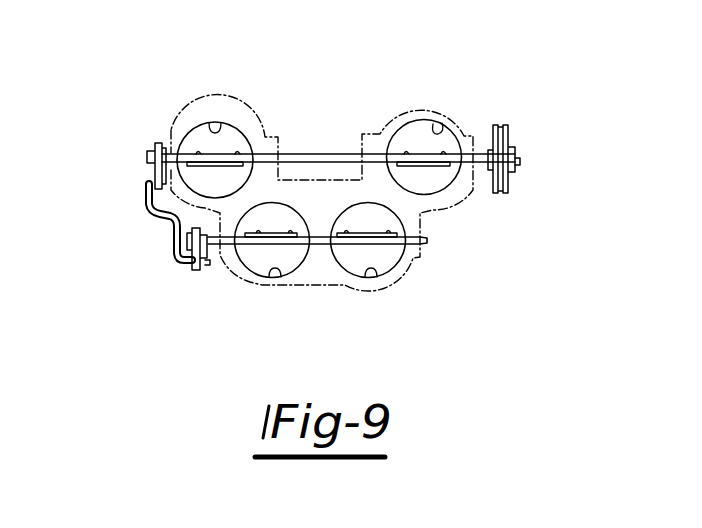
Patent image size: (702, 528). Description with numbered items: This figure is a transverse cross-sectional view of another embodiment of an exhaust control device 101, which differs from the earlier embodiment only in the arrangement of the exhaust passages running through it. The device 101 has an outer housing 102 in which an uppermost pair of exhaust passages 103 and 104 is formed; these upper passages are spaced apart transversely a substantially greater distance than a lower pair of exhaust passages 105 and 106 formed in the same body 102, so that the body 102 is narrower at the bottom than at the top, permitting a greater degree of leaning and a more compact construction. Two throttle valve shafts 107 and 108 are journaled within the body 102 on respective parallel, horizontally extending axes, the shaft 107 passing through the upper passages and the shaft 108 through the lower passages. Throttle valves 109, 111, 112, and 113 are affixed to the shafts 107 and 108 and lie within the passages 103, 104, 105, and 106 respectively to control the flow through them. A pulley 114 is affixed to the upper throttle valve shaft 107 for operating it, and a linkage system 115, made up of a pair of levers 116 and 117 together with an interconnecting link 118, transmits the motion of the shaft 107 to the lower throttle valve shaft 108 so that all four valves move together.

The exhaust control device 101 is at (409, 91).
The outer housing 102 is at (278, 136).
The exhaust passage 103 is at (436, 132).
The exhaust passage 104 is at (215, 122).
The exhaust passage 105 is at (371, 276).
The exhaust passage 106 is at (275, 272).
The throttle valve shaft 107 is at (520, 161).
The throttle valve shaft 108 is at (427, 241).
The throttle valve 109 is at (406, 153).
The throttle valve 111 is at (203, 152).
The throttle valve 112 is at (360, 231).
The throttle valve 113 is at (256, 232).
The pulley 114 is at (505, 130).
The linkage system 115 is at (141, 233).
The lever 116 is at (158, 142).
The lever 117 is at (198, 270).
The interconnecting link 118 is at (171, 256).